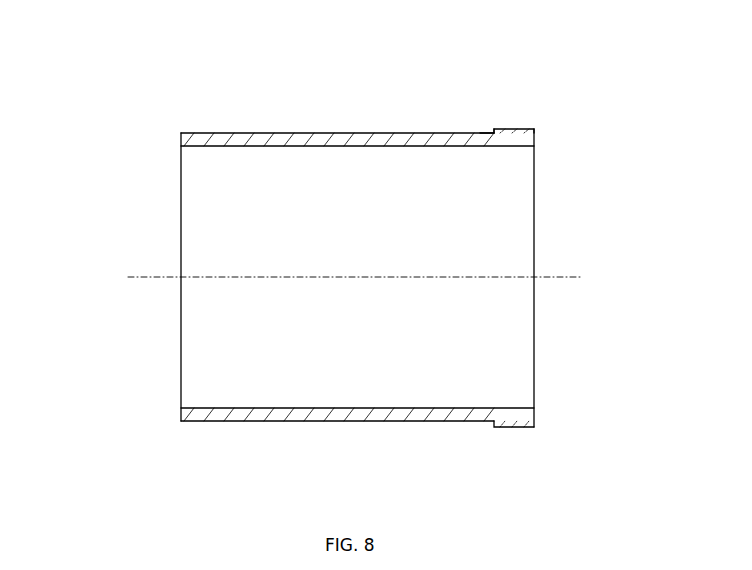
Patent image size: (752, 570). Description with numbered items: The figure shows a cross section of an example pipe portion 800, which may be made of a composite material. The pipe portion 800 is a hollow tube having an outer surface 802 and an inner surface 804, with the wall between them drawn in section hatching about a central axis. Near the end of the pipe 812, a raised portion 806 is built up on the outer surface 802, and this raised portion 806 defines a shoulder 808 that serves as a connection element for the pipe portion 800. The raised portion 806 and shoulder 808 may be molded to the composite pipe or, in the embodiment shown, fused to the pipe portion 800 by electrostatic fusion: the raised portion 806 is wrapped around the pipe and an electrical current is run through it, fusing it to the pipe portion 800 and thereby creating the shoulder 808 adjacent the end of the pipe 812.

The pipe portion 800 is at (183, 102).
The outer surface 802 is at (341, 131).
The inner surface 804 is at (272, 147).
The raised portion 806 is at (518, 128).
The shoulder 808 is at (491, 126).
The end of the pipe 812 is at (536, 392).